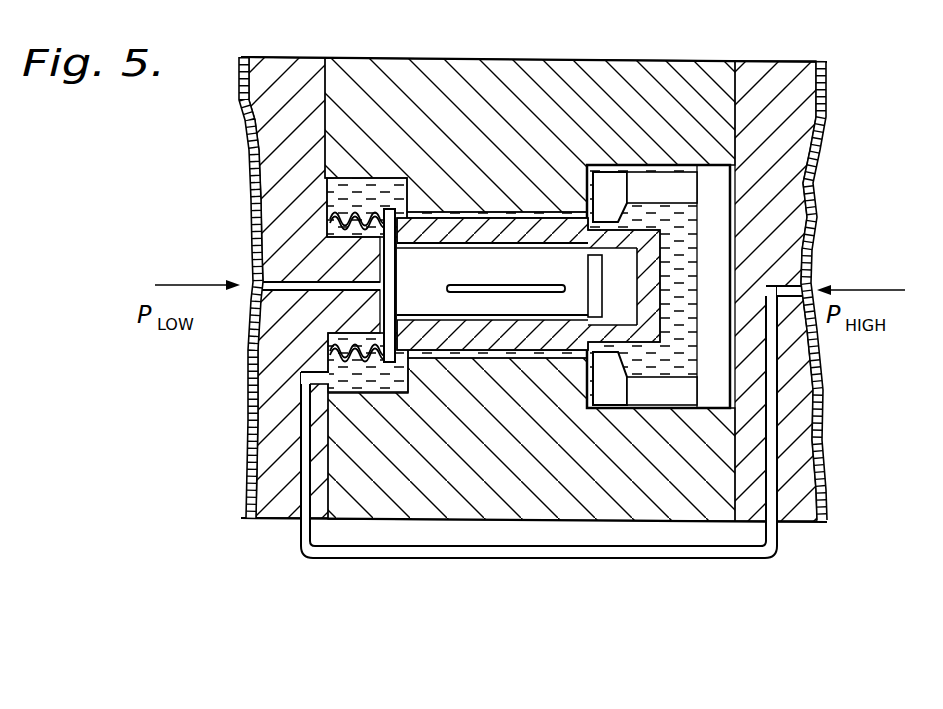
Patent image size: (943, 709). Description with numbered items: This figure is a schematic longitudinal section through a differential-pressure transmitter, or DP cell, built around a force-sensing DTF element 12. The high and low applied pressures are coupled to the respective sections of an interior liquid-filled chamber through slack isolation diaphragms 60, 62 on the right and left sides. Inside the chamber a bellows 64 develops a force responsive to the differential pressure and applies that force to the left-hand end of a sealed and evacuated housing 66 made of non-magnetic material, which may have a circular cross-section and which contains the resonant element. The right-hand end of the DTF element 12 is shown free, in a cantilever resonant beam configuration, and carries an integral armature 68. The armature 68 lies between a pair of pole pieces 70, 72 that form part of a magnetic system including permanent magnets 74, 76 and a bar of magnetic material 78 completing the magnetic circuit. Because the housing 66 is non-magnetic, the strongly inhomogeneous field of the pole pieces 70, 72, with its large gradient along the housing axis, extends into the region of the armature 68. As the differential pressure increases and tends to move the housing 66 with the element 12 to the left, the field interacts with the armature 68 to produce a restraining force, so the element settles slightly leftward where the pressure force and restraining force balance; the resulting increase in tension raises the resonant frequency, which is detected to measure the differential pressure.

The force-sensing DTF element 12 is at (433, 285).
The slack isolation diaphragm 60 is at (824, 145).
The slack isolation diaphragm 62 is at (246, 192).
The bellows 64 is at (330, 335).
The sealed and evacuated housing 66 is at (647, 273).
The armature 68 is at (592, 271).
The pole piece 70 is at (608, 172).
The pole piece 72 is at (608, 405).
The permanent magnet 74 is at (665, 192).
The permanent magnet 76 is at (667, 387).
The bar of magnetic material 78 is at (735, 276).